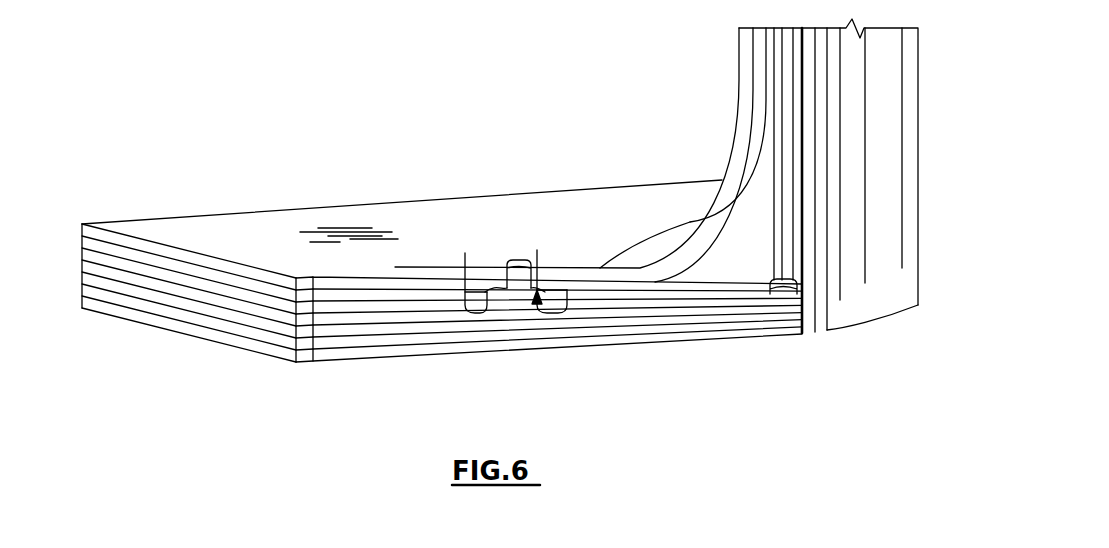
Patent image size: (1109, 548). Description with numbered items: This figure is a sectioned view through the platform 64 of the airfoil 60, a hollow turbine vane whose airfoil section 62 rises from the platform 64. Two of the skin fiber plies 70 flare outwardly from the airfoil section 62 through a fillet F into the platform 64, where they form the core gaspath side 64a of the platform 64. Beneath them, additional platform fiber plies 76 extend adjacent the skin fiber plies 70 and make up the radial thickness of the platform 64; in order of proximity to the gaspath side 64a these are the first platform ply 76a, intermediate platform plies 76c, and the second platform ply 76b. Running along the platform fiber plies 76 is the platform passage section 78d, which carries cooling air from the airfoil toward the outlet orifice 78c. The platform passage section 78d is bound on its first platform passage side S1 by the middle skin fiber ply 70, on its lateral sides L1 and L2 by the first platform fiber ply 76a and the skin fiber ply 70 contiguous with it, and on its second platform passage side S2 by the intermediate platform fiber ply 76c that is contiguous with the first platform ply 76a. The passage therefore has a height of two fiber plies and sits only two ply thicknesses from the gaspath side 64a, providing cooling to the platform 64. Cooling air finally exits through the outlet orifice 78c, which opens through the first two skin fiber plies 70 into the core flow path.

The airfoil 60 is at (458, 121).
The airfoil section 62 is at (739, 64).
The platform 64 is at (386, 219).
The core gaspath side 64a is at (468, 222).
The skin fiber plies 70 is at (296, 285).
The platform fiber plies 76 is at (298, 343).
The first platform ply 76a is at (387, 318).
The second platform ply 76b is at (405, 352).
The intermediate platform ply 76c is at (447, 318).
The outlet orifice 78c is at (518, 258).
The platform passage section 78d is at (577, 325).
The fillet F is at (706, 208).
The lateral side L1 is at (478, 307).
The lateral side L2 is at (542, 255).
The first platform passage side S1 is at (472, 258).
The second platform passage side S2 is at (537, 300).